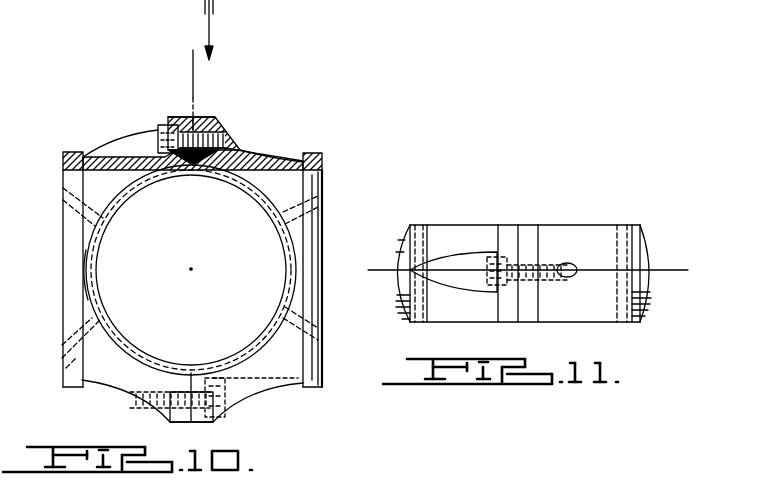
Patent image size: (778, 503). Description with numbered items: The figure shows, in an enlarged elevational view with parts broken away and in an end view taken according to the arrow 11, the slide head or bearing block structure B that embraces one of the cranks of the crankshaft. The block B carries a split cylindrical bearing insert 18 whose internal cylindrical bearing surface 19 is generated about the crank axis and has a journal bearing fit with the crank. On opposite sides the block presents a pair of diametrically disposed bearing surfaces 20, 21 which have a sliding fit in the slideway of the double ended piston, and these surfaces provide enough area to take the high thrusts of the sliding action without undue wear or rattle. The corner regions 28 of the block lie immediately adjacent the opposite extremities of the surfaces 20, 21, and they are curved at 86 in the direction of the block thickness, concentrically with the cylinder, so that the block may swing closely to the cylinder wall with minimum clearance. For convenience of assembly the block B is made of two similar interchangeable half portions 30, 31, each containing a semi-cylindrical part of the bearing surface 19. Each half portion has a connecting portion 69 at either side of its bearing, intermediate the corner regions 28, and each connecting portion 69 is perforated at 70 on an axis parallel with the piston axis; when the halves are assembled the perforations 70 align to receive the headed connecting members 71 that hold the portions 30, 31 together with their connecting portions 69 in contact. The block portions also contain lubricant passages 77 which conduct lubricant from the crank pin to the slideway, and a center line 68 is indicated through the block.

In FIG. 10, the arrow 11 is at (262, 30).
In FIG. 10, the split cylindrical bearing insert 18 is at (90, 296).
In FIG. 10, the internal cylindrical bearing surface 19 is at (285, 293).
In FIG. 10, the bearing surface 20 is at (63, 232).
In FIG. 11, the bearing surface 20 is at (395, 293).
In FIG. 10, the bearing surface 21 is at (328, 231).
In FIG. 11, the bearing surface 21 is at (648, 305).
In FIG. 10, the corner region 28 is at (63, 152).
In FIG. 11, the corner region 28 is at (410, 232).
In FIG. 10, the bearing block half portion 30 is at (58, 179).
In FIG. 11, the bearing block half portion 30 is at (442, 230).
In FIG. 10, the bearing block half portion 31 is at (328, 173).
In FIG. 11, the bearing block half portion 31 is at (556, 236).
In FIG. 10, the center line 68 is at (192, 67).
In FIG. 11, the center line 68 is at (672, 270).
In FIG. 10, the connecting portion 69 is at (178, 116).
In FIG. 11, the connecting portion 69 is at (510, 322).
In FIG. 10, the perforation 70 is at (238, 147).
In FIG. 11, the perforation 70 is at (570, 278).
In FIG. 10, the headed connecting member 71 is at (158, 130).
In FIG. 11, the headed connecting member 71 is at (487, 270).
In FIG. 10, the lubricant passage 77 is at (58, 366).
In FIG. 10, the curved surface 86 is at (318, 153).
In FIG. 11, the curved surface 86 is at (640, 258).
In FIG. 10, the bearing block structure B is at (268, 157).